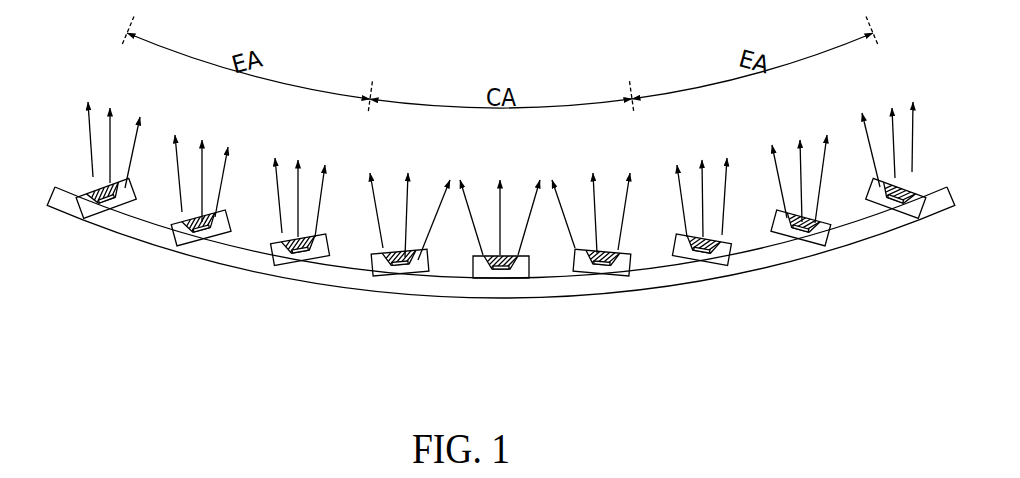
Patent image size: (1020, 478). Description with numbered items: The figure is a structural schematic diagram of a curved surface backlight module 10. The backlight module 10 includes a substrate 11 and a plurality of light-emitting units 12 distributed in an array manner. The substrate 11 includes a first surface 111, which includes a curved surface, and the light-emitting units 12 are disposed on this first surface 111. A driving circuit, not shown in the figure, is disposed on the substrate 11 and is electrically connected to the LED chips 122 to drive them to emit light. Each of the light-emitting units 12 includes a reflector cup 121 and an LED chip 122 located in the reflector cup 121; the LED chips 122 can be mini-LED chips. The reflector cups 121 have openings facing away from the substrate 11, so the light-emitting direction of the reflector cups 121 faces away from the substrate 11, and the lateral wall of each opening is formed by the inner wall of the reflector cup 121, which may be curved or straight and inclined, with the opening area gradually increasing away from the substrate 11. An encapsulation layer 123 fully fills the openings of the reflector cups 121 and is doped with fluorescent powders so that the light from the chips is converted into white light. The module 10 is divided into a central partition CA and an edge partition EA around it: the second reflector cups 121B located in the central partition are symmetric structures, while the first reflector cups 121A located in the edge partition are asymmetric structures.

The curved surface backlight module 10 is at (74, 143).
The substrate 11 is at (299, 272).
The first surface 111 is at (150, 224).
The light-emitting unit 12 is at (536, 269).
The reflector cup 121 is at (891, 390).
The first reflector cup 121A is at (500, 222).
The second reflector cup 121B is at (500, 260).
The LED chip 122 is at (395, 271).
The encapsulation layer 123 is at (210, 240).